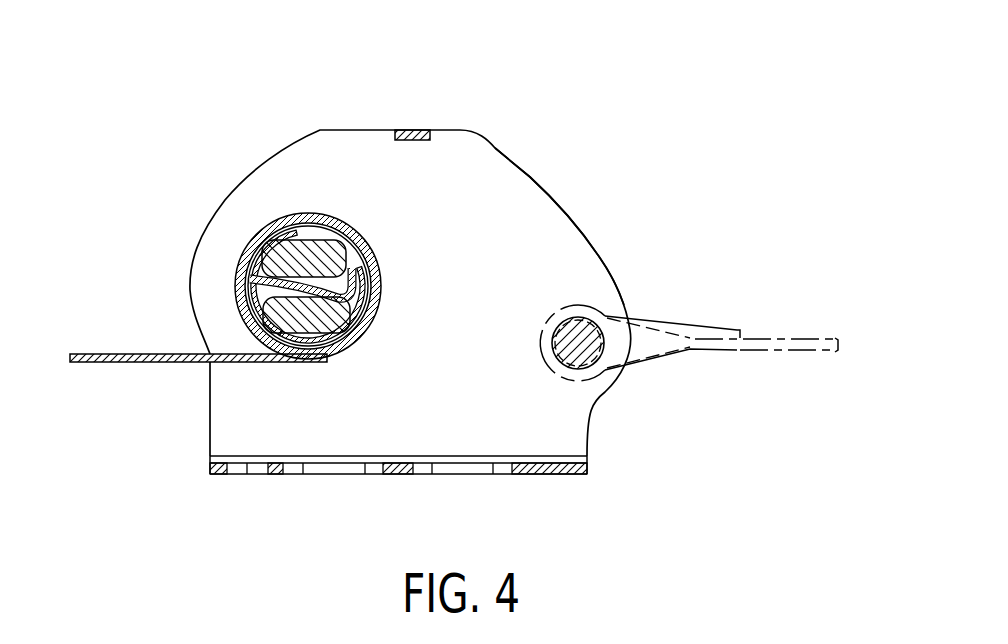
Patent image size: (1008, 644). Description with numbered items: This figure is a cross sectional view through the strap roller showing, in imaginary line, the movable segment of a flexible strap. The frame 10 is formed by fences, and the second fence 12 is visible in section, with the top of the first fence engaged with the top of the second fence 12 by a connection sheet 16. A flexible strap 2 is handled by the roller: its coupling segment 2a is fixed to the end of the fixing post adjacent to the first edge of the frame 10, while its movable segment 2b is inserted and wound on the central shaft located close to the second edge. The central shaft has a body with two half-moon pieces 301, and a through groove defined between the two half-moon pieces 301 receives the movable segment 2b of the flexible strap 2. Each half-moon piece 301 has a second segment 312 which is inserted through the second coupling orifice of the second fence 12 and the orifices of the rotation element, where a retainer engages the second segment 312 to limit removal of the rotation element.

The frame 10 is at (300, 138).
The second fence 12 is at (577, 263).
The connection sheet 16 is at (410, 130).
The flexible strap 2 is at (104, 354).
The coupling segment 2a is at (653, 358).
The movable segment 2b is at (272, 235).
The half-moon pieces 301 is at (303, 255).
The second segment 312 is at (340, 281).